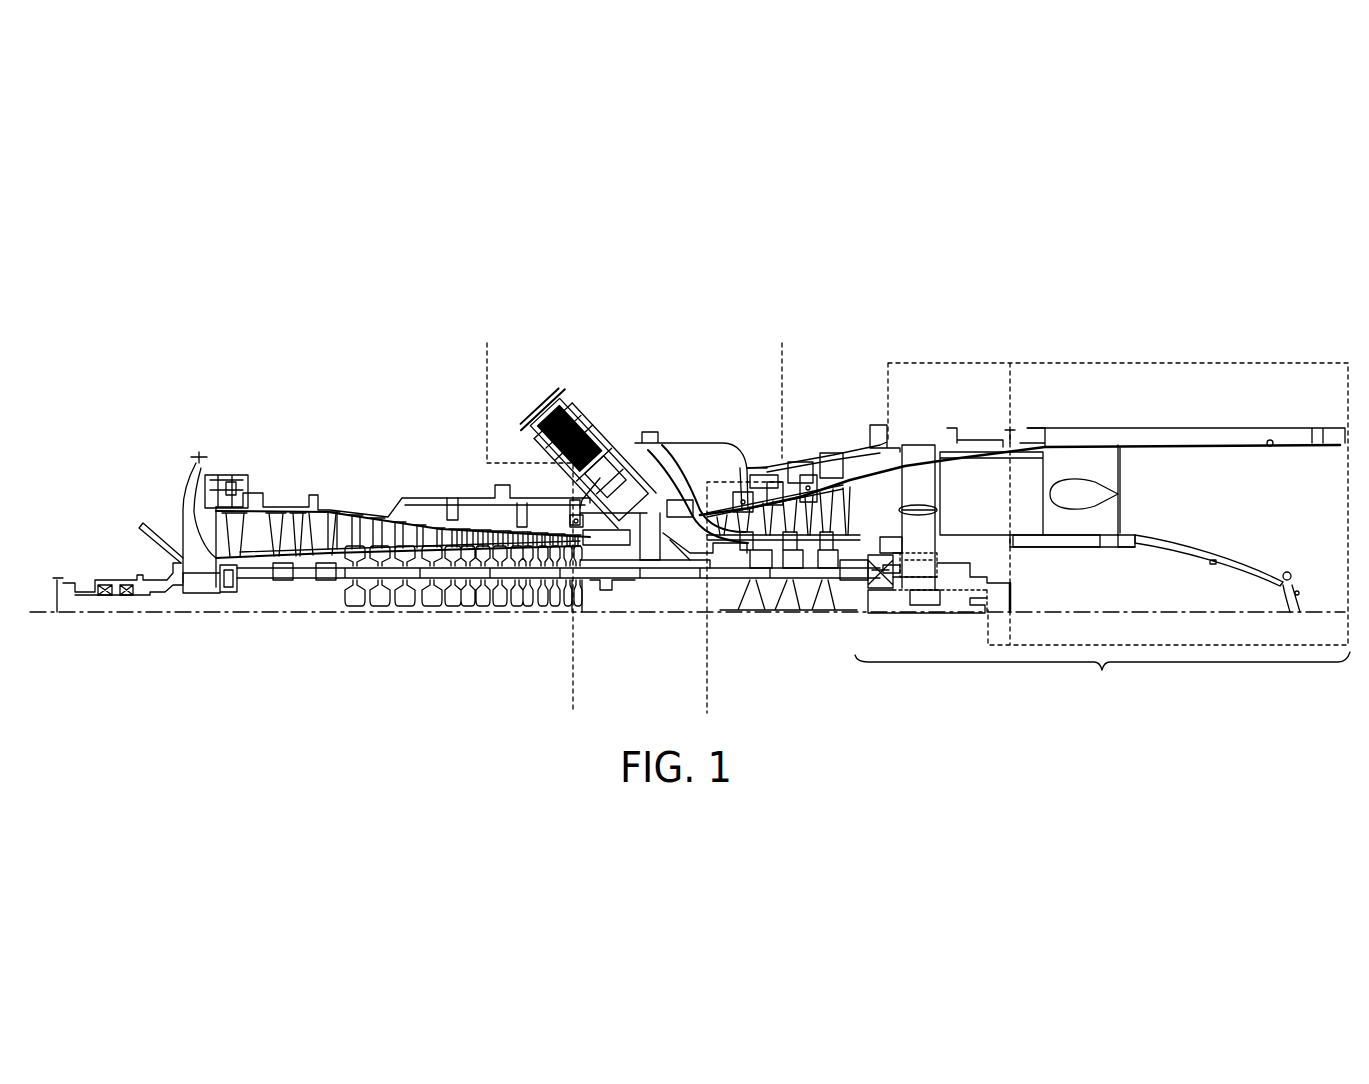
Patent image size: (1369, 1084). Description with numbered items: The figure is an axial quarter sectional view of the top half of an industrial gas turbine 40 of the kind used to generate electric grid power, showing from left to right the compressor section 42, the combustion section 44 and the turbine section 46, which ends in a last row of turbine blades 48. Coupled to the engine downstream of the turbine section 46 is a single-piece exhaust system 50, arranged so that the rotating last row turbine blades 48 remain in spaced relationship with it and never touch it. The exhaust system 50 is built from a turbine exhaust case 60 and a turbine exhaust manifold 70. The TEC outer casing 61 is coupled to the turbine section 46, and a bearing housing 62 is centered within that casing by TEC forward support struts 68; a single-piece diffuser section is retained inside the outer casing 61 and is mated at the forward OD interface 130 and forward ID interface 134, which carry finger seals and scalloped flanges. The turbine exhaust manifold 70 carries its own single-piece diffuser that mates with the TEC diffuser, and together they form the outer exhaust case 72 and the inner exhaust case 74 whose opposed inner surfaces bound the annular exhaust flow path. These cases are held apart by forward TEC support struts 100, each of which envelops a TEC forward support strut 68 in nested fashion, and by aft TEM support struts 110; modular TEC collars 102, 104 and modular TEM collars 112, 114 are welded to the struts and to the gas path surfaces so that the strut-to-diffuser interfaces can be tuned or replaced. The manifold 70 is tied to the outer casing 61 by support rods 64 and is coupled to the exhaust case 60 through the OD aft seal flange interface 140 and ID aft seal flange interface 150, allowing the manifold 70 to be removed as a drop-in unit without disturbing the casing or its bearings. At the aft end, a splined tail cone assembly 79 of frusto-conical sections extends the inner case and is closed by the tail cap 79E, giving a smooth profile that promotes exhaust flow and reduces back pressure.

The industrial gas turbine 40 is at (556, 298).
The compressor section 42 is at (413, 418).
The combustion section 44 is at (686, 392).
The turbine section 46 is at (849, 396).
The last row of turbine blades 48 is at (851, 462).
The single-piece exhaust system 50 is at (1102, 679).
The turbine exhaust case 60 is at (934, 354).
The TEC outer casing 61 is at (941, 430).
The bearing housing 62 is at (955, 602).
The support rods 64 is at (983, 440).
The TEC forward support struts 68 is at (927, 560).
The turbine exhaust manifold 70 is at (1237, 345).
The outer exhaust case 72 is at (1110, 440).
The inner exhaust case 74 is at (1002, 567).
The tail cone assembly 79 is at (1240, 543).
The tail cap 79E is at (1300, 595).
The TEC support struts 100 is at (943, 492).
The TEC collar 102 is at (847, 545).
The TEC collar 104 is at (962, 528).
The TEM support struts 110 is at (1113, 468).
The TEM collar 112 is at (1122, 444).
The TEM collar 114 is at (1122, 528).
The forward OD interface 130 is at (850, 478).
The forward ID interface 134 is at (890, 565).
The OD aft seal flange interface 140 is at (1043, 440).
The ID aft seal flange interface 150 is at (1030, 553).